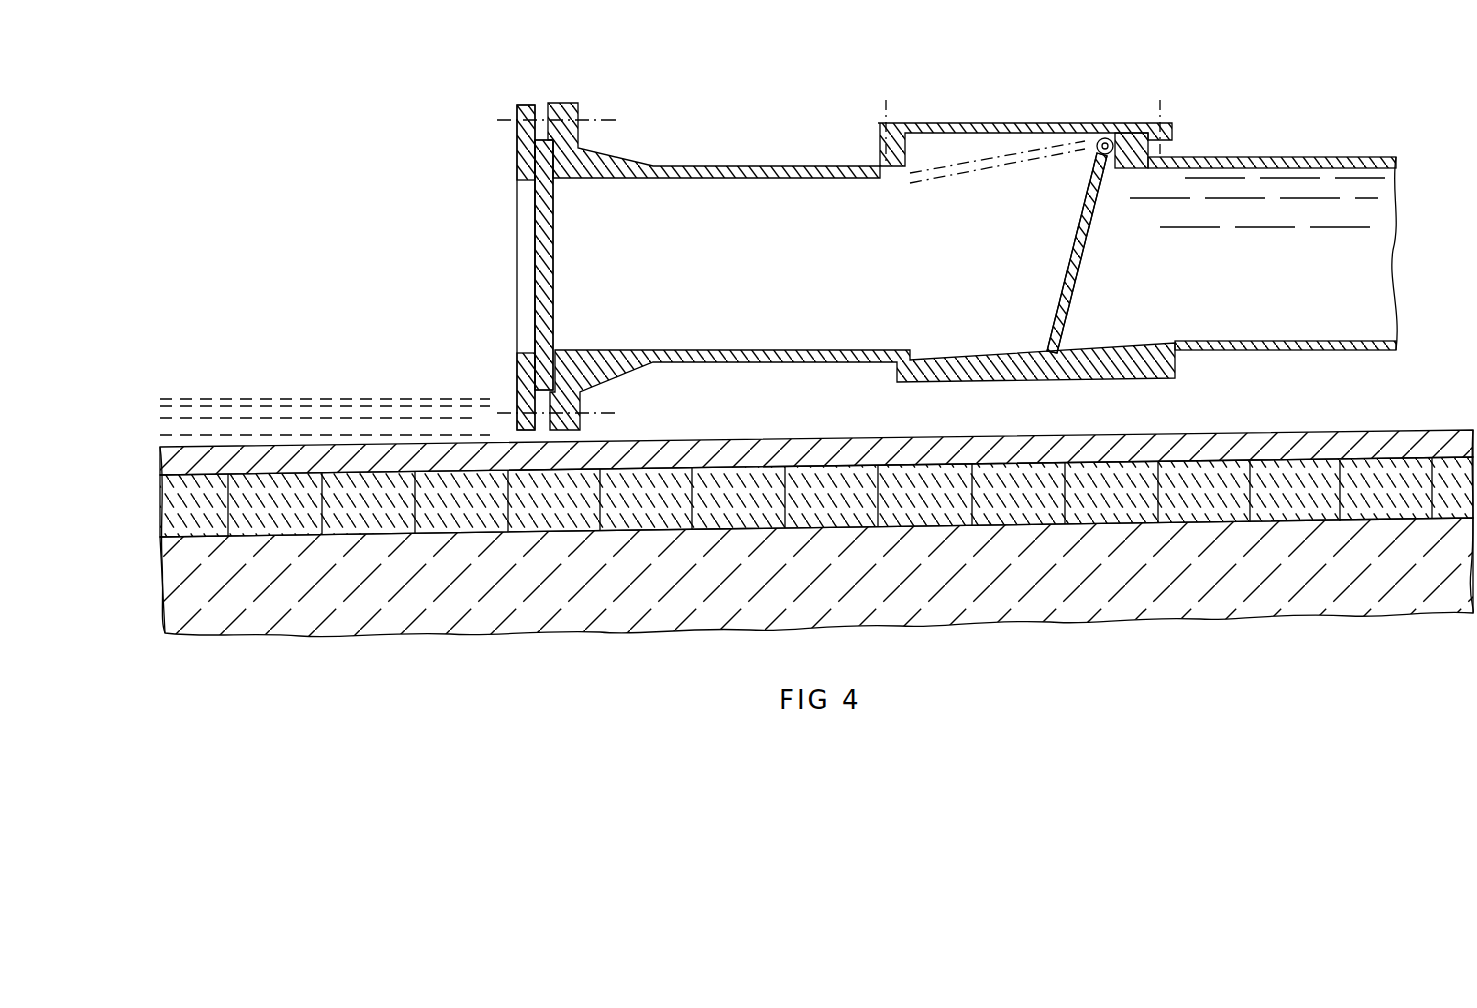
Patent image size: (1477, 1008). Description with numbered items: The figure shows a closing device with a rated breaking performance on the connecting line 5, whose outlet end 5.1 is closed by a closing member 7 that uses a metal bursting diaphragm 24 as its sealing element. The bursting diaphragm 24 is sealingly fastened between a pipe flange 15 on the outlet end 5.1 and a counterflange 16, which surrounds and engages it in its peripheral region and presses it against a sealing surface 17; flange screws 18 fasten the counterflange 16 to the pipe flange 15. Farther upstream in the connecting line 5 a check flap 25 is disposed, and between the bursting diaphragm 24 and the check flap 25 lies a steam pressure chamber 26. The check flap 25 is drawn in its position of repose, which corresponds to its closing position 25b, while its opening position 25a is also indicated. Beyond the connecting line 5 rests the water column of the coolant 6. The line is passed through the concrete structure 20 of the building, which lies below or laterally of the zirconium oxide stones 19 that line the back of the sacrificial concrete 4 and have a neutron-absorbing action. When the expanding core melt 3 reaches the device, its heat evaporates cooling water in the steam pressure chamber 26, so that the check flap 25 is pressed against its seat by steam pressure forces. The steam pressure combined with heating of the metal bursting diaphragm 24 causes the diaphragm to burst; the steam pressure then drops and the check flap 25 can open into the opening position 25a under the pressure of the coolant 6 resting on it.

The core melt 3 is at (224, 400).
The sacrificial concrete 4 is at (1396, 430).
The connecting line 5 is at (1236, 155).
The outlet end 5.1 is at (735, 362).
The coolant 6 is at (1300, 215).
The closing member 7 is at (775, 146).
The pipe flange 15 is at (558, 103).
The counterflange 16 is at (527, 105).
The sealing surface 17 is at (548, 180).
The flange screws 18 is at (595, 120).
The zirconium oxide stones 19 is at (1292, 502).
The concrete structure 20 is at (1175, 592).
The metal bursting diaphragm 24 is at (540, 231).
The check flap 25 is at (1078, 243).
The opening position 25a is at (972, 160).
The closing position 25b is at (1085, 268).
The steam pressure chamber 26 is at (715, 200).